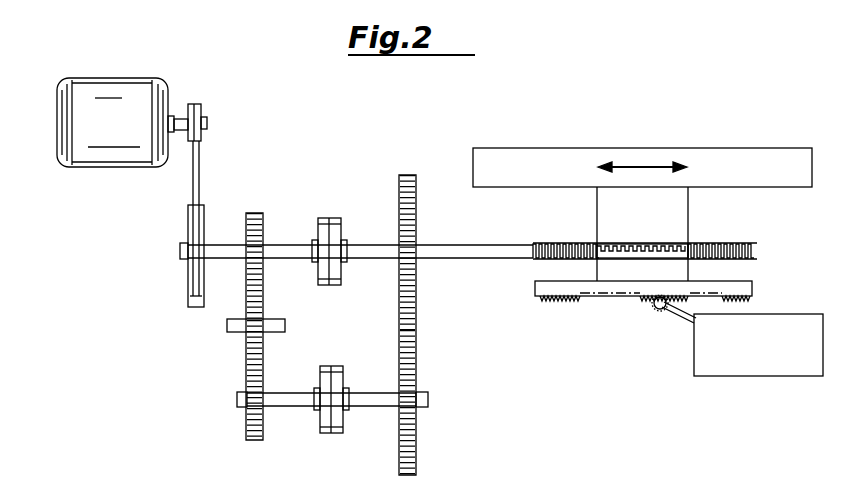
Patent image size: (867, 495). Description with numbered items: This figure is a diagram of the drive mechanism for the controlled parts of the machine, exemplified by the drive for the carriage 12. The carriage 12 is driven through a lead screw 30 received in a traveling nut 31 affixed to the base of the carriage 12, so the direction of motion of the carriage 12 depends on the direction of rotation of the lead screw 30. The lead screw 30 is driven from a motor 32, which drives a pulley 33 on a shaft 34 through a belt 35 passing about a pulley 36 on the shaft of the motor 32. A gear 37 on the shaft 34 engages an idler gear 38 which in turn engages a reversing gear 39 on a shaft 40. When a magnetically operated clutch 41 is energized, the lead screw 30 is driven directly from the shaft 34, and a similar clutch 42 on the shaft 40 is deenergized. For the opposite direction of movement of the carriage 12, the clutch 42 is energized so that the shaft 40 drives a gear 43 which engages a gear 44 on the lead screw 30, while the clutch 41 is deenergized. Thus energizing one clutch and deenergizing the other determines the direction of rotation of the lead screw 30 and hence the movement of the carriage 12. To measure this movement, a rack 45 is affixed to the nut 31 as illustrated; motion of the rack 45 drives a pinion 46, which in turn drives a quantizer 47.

The carriage 12 is at (752, 162).
The lead screw 30 is at (514, 252).
The traveling nut 31 is at (680, 230).
The motor 32 is at (100, 88).
The pulley 33 is at (188, 223).
The shaft 34 is at (288, 247).
The belt 35 is at (196, 168).
The pulley 36 is at (203, 111).
The gear 37 is at (254, 214).
The idler gear 38 is at (248, 343).
The reversing gear 39 is at (248, 426).
The shaft 40 is at (292, 396).
The magnetically operated clutch 41 is at (334, 224).
The clutch 42 is at (337, 376).
The gear 43 is at (411, 452).
The gear 44 is at (409, 228).
The rack 45 is at (752, 289).
The pinion 46 is at (658, 311).
The quantizer 47 is at (778, 376).